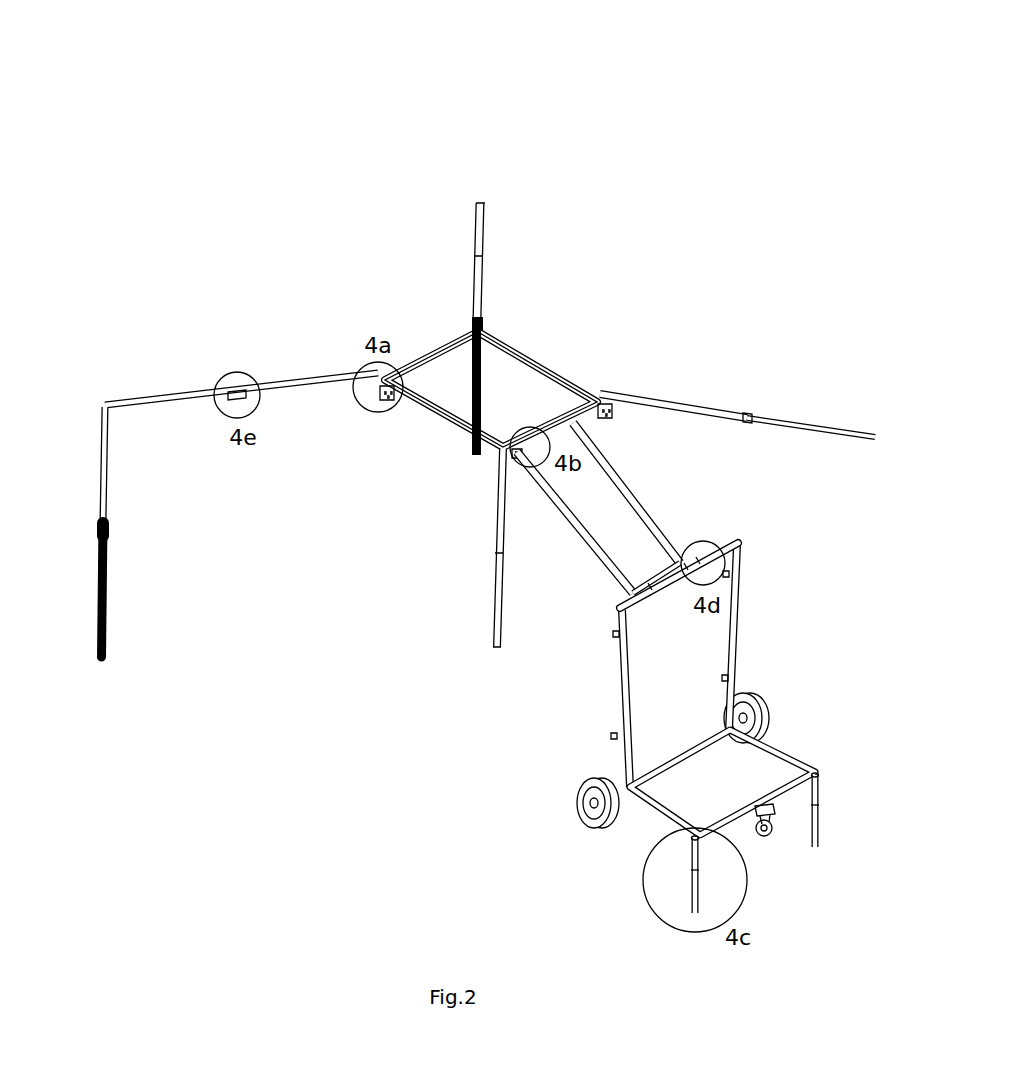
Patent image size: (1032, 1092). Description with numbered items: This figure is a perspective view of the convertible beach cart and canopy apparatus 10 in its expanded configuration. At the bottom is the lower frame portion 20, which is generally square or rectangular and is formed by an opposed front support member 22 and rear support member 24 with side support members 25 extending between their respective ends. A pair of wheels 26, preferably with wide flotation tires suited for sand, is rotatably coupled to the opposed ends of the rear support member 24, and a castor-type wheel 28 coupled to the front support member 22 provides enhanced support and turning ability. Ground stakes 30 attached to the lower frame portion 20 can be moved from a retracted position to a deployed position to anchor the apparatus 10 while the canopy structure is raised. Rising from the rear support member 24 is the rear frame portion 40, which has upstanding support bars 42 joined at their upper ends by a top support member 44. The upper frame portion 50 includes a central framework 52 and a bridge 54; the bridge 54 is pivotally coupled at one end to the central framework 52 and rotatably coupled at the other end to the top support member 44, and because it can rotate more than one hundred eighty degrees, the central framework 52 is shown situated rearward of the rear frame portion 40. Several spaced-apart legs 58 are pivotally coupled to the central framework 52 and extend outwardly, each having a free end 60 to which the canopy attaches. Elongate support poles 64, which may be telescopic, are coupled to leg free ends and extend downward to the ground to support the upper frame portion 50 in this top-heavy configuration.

The convertible beach cart and canopy apparatus 10 is at (688, 157).
The lower frame portion 20 is at (800, 752).
The front support member 22 is at (699, 824).
The rear support member 24 is at (692, 752).
The side support member 25 is at (783, 752).
The wheel 26 is at (755, 705).
The castor-type wheel 28 is at (770, 840).
The ground stake 30 is at (832, 790).
The rear frame portion 40 is at (752, 578).
The upstanding support bar 42 is at (735, 634).
The top support member 44 is at (733, 548).
The upper frame portion 50 is at (642, 378).
The central framework 52 is at (517, 345).
The bridge 54 is at (618, 475).
The leg 58 is at (484, 270).
The free end 60 is at (481, 203).
The elongate support pole 64 is at (107, 604).